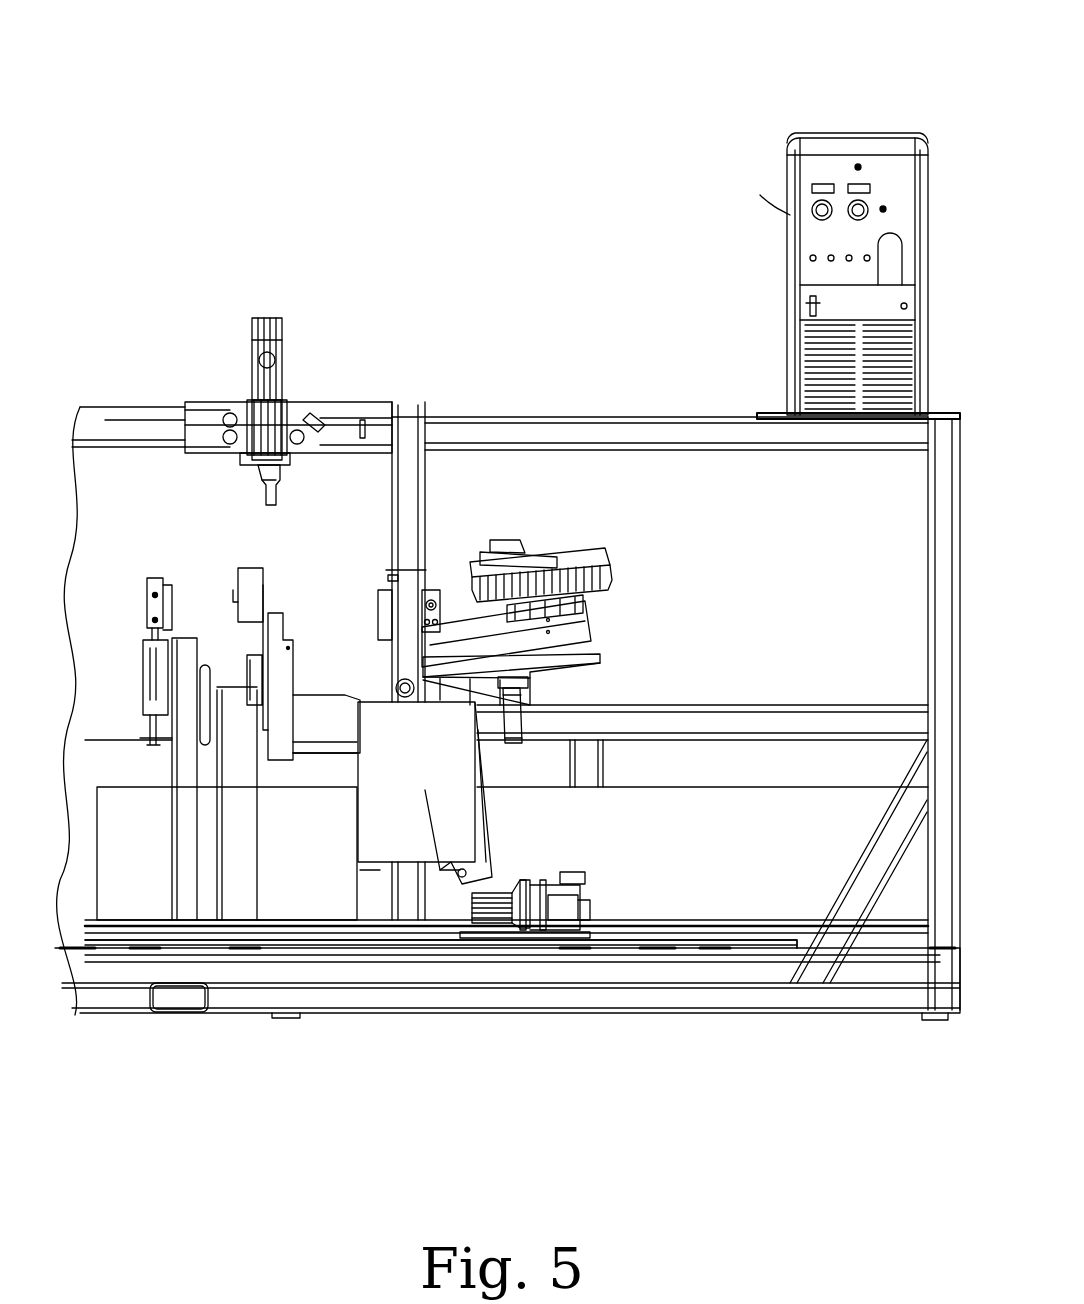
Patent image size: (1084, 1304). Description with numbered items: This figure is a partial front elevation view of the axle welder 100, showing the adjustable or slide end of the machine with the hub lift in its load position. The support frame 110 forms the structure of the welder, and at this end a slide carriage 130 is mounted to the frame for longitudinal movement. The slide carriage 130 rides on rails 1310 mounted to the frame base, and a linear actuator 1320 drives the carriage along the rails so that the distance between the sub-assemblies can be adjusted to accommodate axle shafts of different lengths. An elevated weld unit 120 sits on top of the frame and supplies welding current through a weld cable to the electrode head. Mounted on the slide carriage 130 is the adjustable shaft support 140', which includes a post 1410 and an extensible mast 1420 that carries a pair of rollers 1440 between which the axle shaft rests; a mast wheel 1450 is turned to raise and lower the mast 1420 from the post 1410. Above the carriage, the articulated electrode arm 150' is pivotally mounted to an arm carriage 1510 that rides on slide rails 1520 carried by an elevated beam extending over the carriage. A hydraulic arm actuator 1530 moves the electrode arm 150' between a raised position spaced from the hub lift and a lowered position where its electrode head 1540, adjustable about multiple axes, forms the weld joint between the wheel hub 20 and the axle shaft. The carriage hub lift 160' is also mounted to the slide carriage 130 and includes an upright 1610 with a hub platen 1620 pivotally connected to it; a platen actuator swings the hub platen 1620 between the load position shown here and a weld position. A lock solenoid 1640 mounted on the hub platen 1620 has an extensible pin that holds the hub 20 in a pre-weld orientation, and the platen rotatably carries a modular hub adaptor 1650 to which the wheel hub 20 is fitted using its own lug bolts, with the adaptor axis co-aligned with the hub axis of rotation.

The axle welder 100 is at (530, 85).
The support frame 110 is at (762, 1003).
The weld unit 120 is at (790, 213).
The slide carriage 130 is at (295, 913).
The adjustable shaft support 140' is at (181, 979).
The articulated electrode arm 150' is at (295, 412).
The arm carriage 1510 is at (243, 443).
The slide rails 1520 is at (335, 427).
The hydraulic arm actuator 1530 is at (268, 372).
The electrode head 1540 is at (278, 497).
The post 1410 is at (248, 857).
The extensible mast 1420 is at (282, 683).
The rollers 1440 is at (253, 590).
The mast wheel 1450 is at (205, 675).
The carriage hub lift 160' is at (527, 782).
The upright 1610 is at (408, 893).
The hub platen 1620 is at (555, 665).
The lock solenoid 1640 is at (522, 727).
The hub adaptor 1650 is at (585, 630).
The wheel hub 20 is at (570, 570).
The rails 1310 is at (685, 943).
The linear actuator 1320 is at (562, 898).